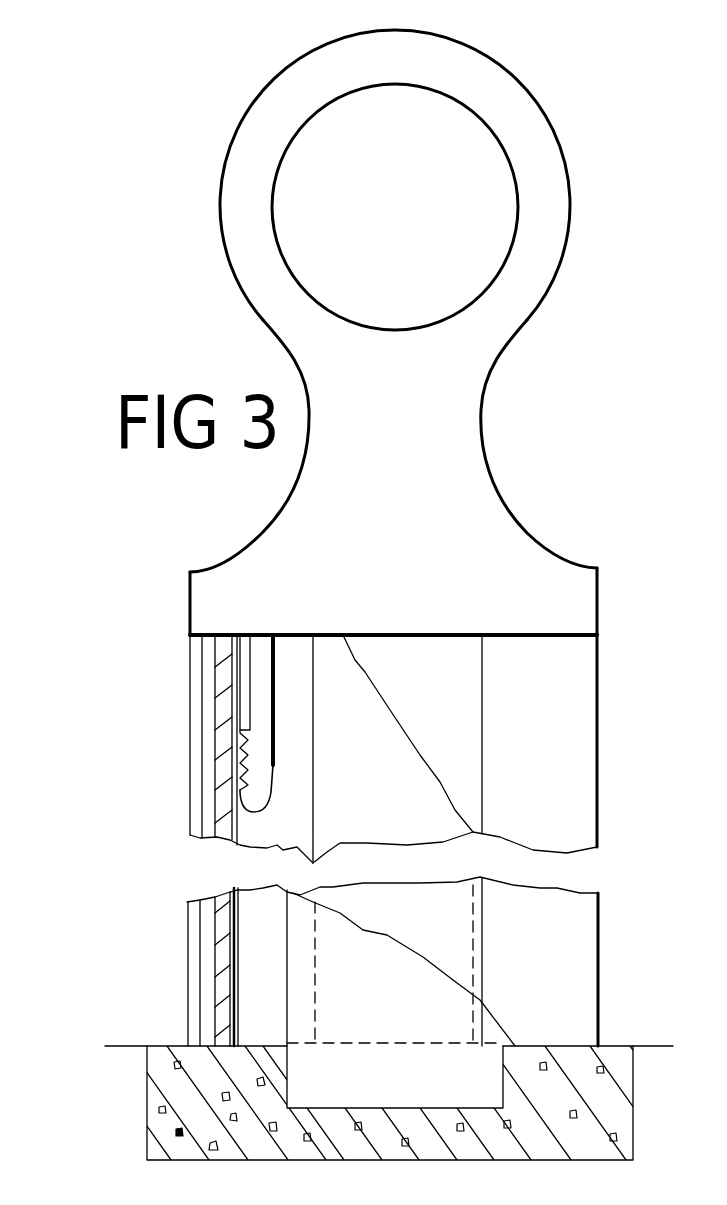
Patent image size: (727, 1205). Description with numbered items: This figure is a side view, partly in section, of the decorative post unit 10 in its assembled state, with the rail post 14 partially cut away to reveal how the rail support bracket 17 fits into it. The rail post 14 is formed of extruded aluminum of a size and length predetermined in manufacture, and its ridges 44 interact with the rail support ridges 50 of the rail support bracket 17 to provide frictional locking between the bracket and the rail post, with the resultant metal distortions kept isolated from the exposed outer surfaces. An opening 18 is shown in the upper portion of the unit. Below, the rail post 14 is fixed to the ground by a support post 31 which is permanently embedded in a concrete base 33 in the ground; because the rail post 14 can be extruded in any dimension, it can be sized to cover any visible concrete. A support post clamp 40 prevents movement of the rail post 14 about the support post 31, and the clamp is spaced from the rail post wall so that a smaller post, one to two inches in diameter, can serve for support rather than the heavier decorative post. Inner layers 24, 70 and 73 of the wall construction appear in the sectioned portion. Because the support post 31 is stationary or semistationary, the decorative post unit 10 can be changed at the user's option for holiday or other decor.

The decorative post unit 10 is at (550, 448).
The rail post 14 is at (88, 756).
The rail support bracket 17 is at (477, 392).
The opening in head 18 is at (512, 200).
The inner sleeve layer 24 is at (222, 710).
The support post 31 is at (437, 1057).
The concrete footing / ground 33 is at (612, 1050).
The support post clamp 40 is at (406, 835).
The ridges 44 is at (235, 831).
The rail support ridges 50 is at (268, 764).
The outer layer 70 is at (195, 690).
The intermediate layer 73 is at (210, 657).